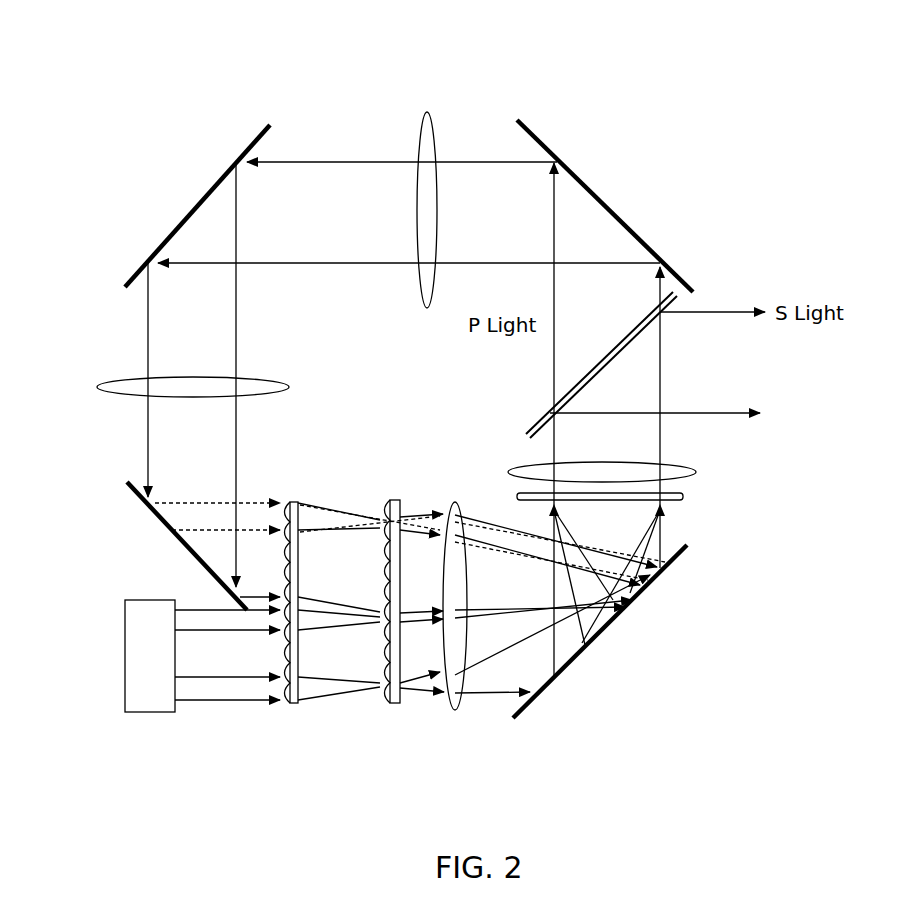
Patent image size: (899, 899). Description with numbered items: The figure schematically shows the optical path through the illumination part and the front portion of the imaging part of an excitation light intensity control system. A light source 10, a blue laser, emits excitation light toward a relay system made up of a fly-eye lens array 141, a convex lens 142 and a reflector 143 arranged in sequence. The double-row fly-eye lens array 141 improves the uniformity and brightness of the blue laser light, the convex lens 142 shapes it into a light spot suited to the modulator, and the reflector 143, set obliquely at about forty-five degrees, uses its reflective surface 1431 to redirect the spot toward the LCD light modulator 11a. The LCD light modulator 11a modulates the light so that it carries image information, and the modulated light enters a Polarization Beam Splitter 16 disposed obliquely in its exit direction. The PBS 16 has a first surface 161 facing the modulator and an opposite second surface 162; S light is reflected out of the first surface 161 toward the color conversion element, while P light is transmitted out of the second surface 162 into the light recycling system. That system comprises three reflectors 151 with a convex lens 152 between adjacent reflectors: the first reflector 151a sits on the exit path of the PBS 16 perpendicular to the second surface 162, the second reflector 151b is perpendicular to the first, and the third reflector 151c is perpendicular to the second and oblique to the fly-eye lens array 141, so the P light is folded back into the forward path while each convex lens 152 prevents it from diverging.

The light source 10 is at (150, 695).
The fly-eye lens array 141 is at (387, 703).
The convex lens 142 is at (452, 707).
The reflector 143 is at (593, 637).
The reflective surface 1431 is at (675, 550).
The LCD light modulator 11a is at (683, 497).
The Polarization Beam Splitter 16 is at (522, 438).
The first surface 161 is at (620, 347).
The second surface 162 is at (532, 428).
The convex lens 152 is at (417, 275).
The reflectors 151 is at (243, 36).
The first reflector 151a is at (607, 200).
The second reflector 151b is at (181, 224).
The third reflector 151c is at (163, 527).